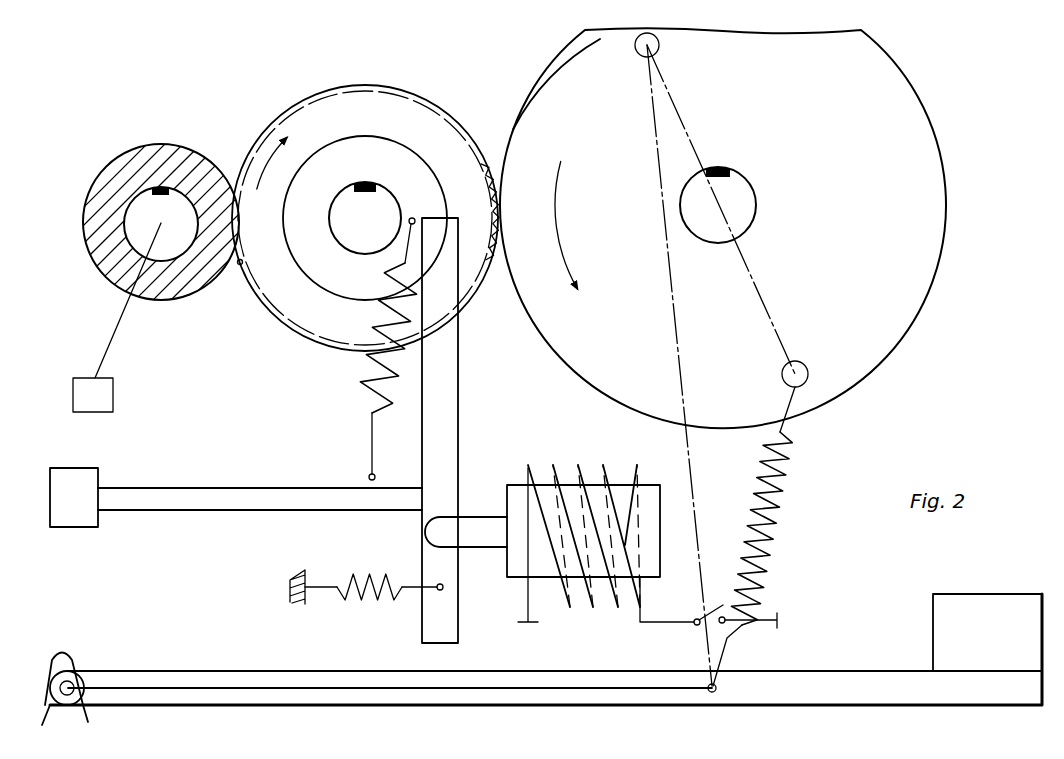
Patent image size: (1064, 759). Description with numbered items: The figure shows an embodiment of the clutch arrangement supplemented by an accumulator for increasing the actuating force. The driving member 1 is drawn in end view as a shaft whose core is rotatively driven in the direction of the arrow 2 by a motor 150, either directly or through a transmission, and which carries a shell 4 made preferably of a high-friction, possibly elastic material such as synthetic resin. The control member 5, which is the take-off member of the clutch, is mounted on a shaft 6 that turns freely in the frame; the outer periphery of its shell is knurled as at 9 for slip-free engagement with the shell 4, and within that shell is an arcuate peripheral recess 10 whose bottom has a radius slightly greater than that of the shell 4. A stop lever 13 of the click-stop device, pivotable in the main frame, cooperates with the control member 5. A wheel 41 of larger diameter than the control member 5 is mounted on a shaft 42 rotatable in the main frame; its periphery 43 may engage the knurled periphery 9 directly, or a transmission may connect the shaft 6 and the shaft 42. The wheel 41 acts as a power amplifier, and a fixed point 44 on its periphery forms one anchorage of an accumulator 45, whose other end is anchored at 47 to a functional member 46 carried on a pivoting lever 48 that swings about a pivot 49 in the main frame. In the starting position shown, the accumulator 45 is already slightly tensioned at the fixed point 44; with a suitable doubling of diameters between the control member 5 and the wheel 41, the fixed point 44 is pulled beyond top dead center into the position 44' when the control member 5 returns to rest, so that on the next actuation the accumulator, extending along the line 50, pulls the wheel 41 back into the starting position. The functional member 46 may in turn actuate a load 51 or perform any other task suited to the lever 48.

The driving member 1 is at (142, 243).
The arrow 2 is at (50, 185).
The shell 4 is at (177, 288).
The control member 5 is at (330, 270).
The shaft 6 is at (356, 206).
The knurled periphery 9 is at (435, 113).
The peripheral recess 10 is at (238, 264).
The stop lever 13 is at (443, 418).
The wheel 41 is at (922, 152).
The shaft 42 is at (740, 218).
The periphery 43 is at (538, 93).
The fixed point 44 is at (756, 233).
The position 44' is at (629, 69).
The accumulator 45 is at (783, 487).
The functional member 46 is at (803, 680).
The anchorage 47 is at (708, 685).
The pivoting lever 48 is at (258, 670).
The pivot 49 is at (70, 686).
The line 50 is at (670, 350).
The load 51 is at (943, 630).
The motor 150 is at (103, 396).